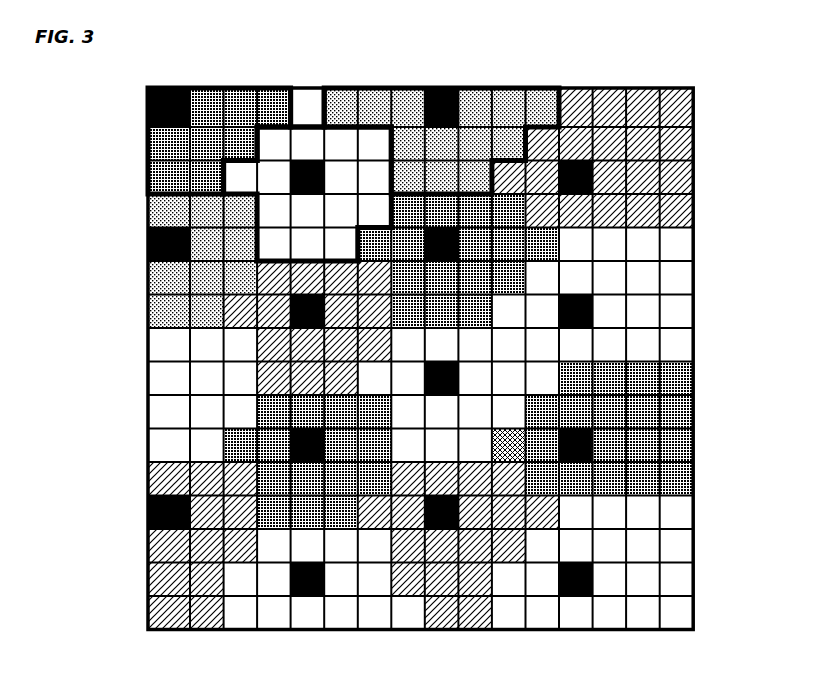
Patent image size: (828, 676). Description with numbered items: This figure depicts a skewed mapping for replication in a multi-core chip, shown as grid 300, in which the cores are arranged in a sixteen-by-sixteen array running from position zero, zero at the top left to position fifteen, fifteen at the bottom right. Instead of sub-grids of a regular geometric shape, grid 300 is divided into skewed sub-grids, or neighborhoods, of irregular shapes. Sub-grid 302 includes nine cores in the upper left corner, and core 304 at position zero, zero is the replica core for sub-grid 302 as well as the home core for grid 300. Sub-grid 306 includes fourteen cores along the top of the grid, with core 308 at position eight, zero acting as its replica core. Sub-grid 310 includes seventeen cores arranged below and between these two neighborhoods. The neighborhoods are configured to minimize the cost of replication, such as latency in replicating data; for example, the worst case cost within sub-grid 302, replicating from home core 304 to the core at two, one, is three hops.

The grid 300 is at (431, 338).
The sub-grid 302 is at (243, 87).
The core 304 is at (149, 104).
The sub-grid 306 is at (347, 87).
The core 308 is at (447, 87).
The sub-grid 310 is at (312, 87).